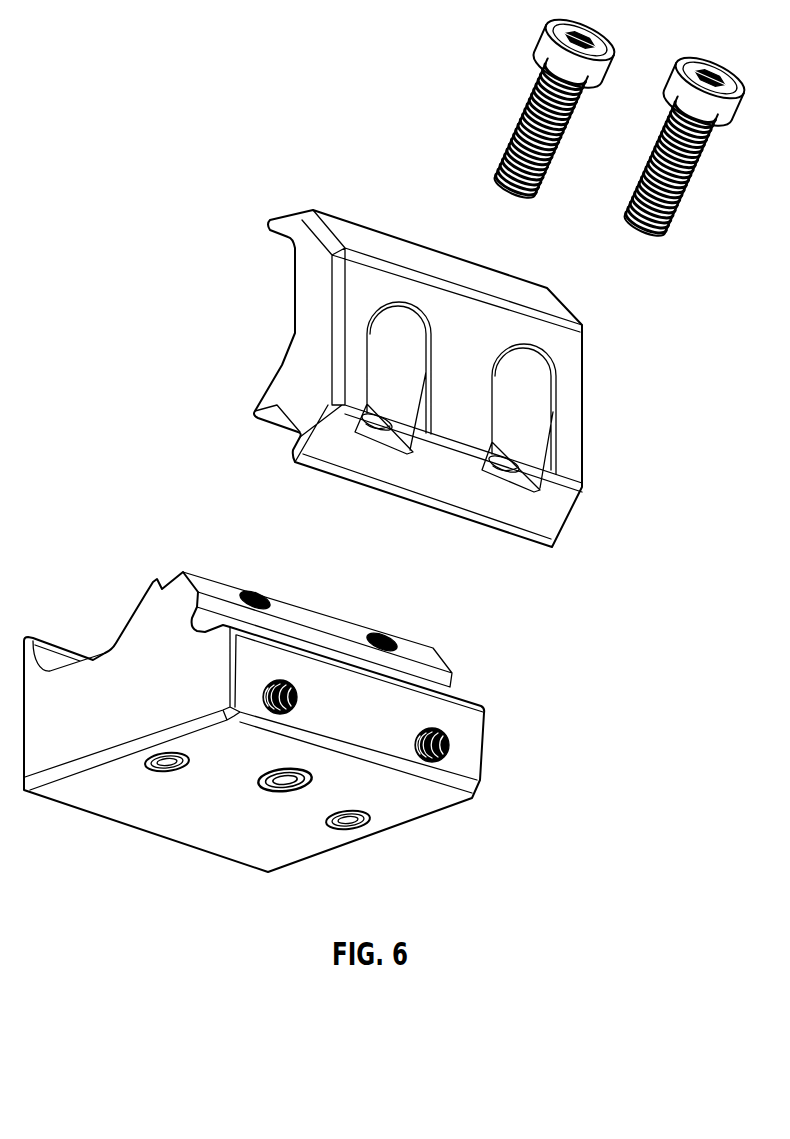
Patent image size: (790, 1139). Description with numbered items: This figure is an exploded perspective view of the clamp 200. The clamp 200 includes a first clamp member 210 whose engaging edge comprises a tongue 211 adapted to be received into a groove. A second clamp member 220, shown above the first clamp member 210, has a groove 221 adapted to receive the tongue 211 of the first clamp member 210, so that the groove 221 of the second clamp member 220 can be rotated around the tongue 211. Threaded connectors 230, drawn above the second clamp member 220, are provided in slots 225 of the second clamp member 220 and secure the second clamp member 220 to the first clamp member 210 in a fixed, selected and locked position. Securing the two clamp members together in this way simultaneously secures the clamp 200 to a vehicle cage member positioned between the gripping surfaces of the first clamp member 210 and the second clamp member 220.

The clamp 200 is at (163, 250).
The first clamp member 210 is at (490, 727).
The tongue 211 is at (177, 590).
The second clamp member 220 is at (585, 377).
The groove 221 is at (282, 435).
The slots 225 is at (547, 467).
The threaded connectors 230 is at (485, 102).